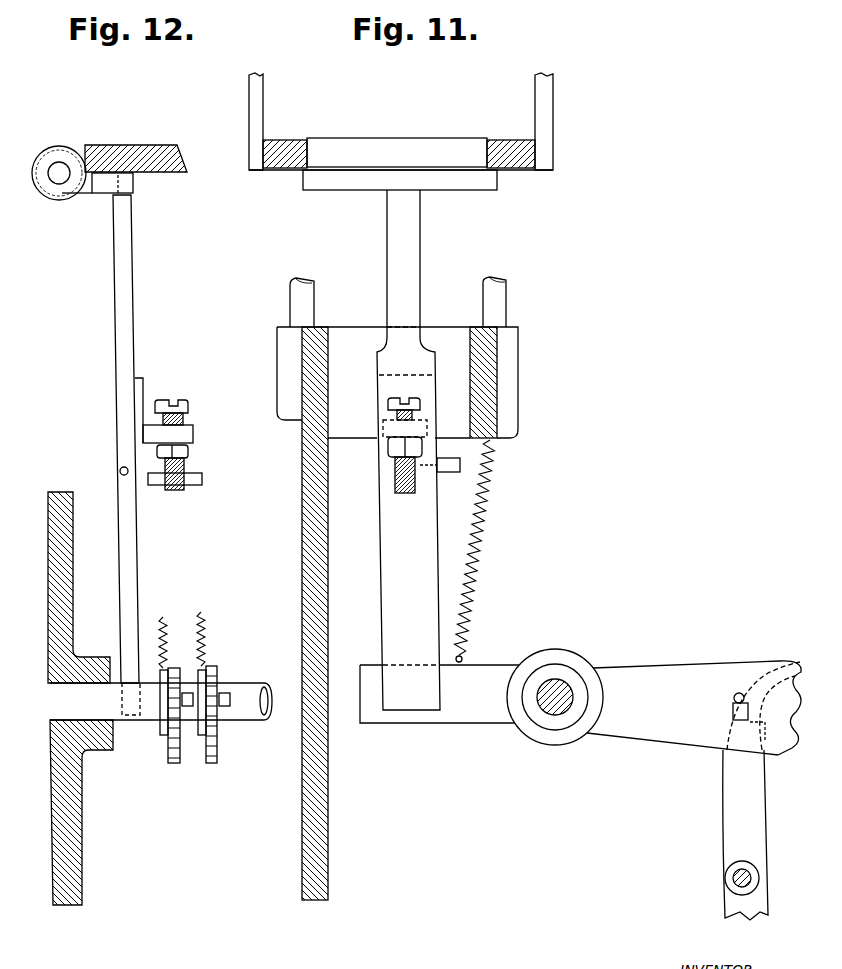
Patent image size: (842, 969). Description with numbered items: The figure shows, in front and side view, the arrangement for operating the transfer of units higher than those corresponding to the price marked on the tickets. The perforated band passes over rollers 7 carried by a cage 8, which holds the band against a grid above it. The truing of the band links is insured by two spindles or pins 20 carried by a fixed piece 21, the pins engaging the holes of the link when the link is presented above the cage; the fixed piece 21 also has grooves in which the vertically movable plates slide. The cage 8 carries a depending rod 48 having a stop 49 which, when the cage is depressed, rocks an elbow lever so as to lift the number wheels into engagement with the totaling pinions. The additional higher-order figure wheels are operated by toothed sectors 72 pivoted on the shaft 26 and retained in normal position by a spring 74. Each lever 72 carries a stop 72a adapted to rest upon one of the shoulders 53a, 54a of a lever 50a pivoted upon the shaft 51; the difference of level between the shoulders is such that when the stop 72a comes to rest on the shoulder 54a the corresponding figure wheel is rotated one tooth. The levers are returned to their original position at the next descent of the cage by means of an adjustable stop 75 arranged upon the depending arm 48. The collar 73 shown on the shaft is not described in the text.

In FIG. 12, the roller 7 is at (50, 188).
In FIG. 12, the cage 8 is at (168, 164).
In FIG. 11, the cage 8 is at (397, 152).
In FIG. 11, the spindle or pin 20 is at (308, 302).
In FIG. 11, the fixed piece 21 is at (306, 780).
In FIG. 11, the shaft 26 is at (558, 716).
In FIG. 12, the depending rod 48 is at (133, 326).
In FIG. 11, the depending rod 48 is at (400, 440).
In FIG. 12, the stop 49 is at (120, 471).
In FIG. 11, the stop 49 is at (455, 472).
In FIG. 11, the lever 50a is at (775, 669).
In FIG. 11, the shaft 51 is at (727, 880).
In FIG. 11, the shoulder 53a is at (733, 708).
In FIG. 11, the shoulder 54a is at (749, 738).
In FIG. 11, the toothed sector 72 is at (570, 708).
In FIG. 12, the stop 72a is at (190, 696).
In FIG. 11, the stop 72a is at (735, 694).
In FIG. 12, the toothed collar 73 is at (177, 764).
In FIG. 11, the toothed collar 73 is at (789, 716).
In FIG. 11, the spring 74 is at (481, 551).
In FIG. 12, the adjustable stop 75 is at (197, 478).
In FIG. 11, the adjustable stop 75 is at (388, 451).